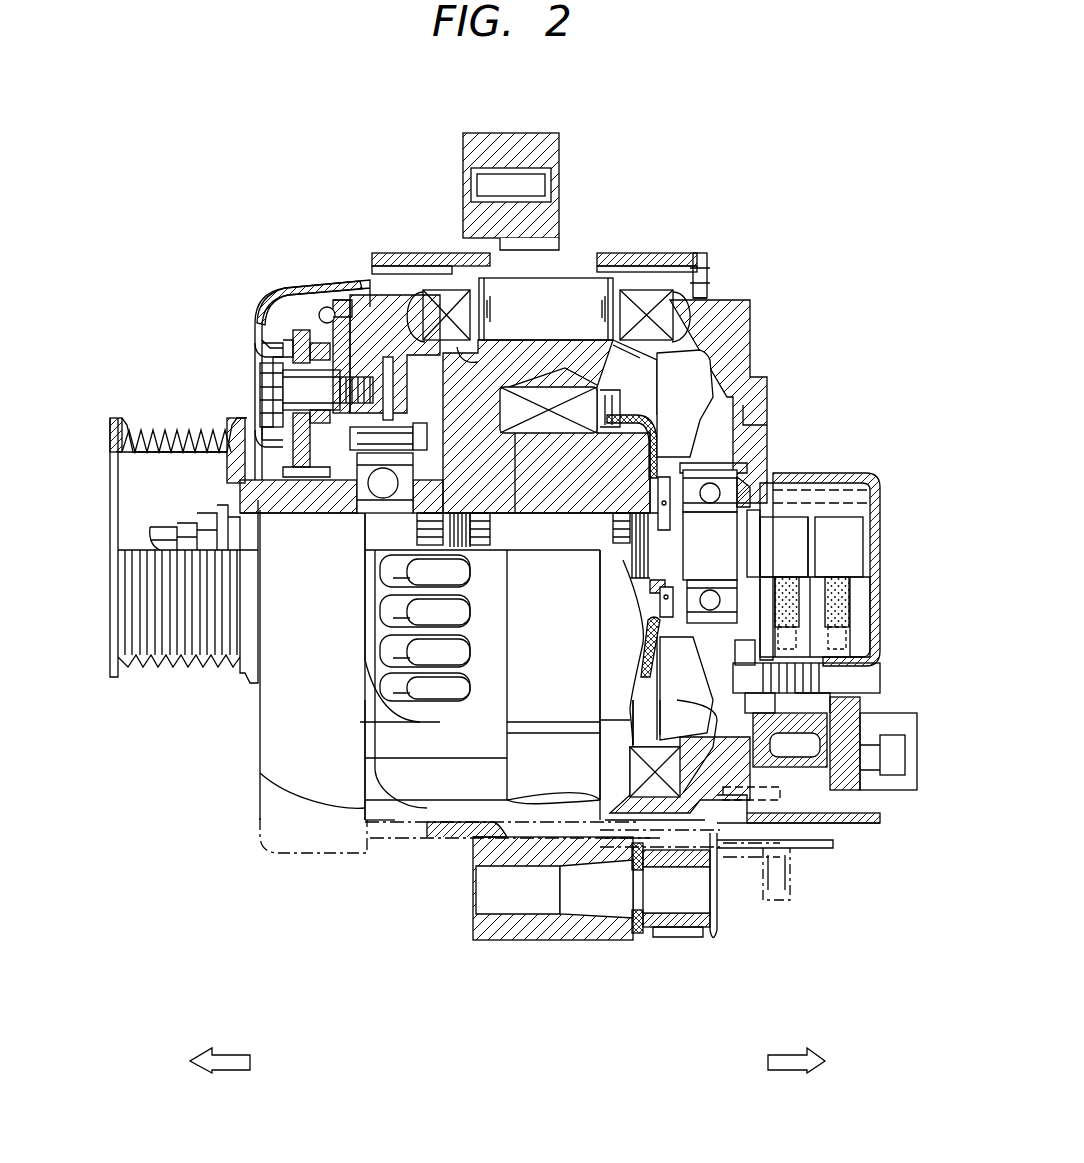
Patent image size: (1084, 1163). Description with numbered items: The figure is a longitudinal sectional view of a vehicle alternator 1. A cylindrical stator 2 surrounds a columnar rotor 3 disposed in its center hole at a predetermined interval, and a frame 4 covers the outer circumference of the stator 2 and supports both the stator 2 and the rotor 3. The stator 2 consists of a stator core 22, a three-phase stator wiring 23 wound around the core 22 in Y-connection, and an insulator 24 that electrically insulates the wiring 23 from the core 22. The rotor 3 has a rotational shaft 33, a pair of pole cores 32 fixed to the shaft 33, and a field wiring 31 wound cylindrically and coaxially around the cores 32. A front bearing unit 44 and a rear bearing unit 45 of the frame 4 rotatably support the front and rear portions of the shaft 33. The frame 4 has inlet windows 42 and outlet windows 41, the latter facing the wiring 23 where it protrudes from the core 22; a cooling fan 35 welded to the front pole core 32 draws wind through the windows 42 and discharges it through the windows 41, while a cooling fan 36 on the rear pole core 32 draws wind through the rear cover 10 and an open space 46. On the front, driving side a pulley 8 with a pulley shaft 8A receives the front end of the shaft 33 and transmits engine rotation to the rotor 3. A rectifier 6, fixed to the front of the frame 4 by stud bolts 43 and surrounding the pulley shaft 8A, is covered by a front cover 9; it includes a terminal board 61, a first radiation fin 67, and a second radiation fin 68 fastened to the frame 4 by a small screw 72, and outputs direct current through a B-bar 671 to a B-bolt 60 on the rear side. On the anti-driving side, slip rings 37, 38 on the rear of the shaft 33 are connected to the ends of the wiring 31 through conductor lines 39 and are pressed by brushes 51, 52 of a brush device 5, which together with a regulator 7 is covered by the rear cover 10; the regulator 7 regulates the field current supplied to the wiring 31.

The alternator 1 is at (767, 140).
The stator 2 is at (537, 358).
The rotor 3 is at (570, 307).
The frame 4 is at (497, 936).
The brush device 5 is at (817, 642).
The rectifier 6 is at (287, 317).
The regulator 7 is at (897, 790).
The pulley 8 is at (118, 665).
The pulley shaft 8A is at (247, 490).
The front cover 9 is at (307, 783).
The rear cover 10 is at (878, 530).
The stator core 22 is at (600, 287).
The stator wiring 23 is at (450, 303).
The insulator 24 is at (655, 290).
The field wiring 31 is at (500, 385).
The pole cores 32 is at (398, 375).
The rotational shaft 33 is at (293, 537).
The cooling fan 35 is at (367, 320).
The cooling fan 36 is at (730, 360).
The slip ring 37 is at (793, 525).
The slip ring 38 is at (840, 523).
The conductor lines 39 is at (735, 420).
The outlet windows 41 is at (430, 685).
The inlet windows 42 is at (370, 640).
The stud bolts 43 is at (287, 388).
The bearing unit 44 is at (365, 500).
The bearing unit 45 is at (710, 490).
The open space 46 is at (723, 680).
The brush 51 is at (797, 592).
The brush 52 is at (830, 615).
The B-bolt 60 is at (790, 878).
The terminal board 61 is at (282, 300).
The first radiation fin 67 is at (260, 340).
The second radiation fin 68 is at (330, 307).
The small screw 72 is at (313, 287).
The B-bar 671 is at (402, 835).